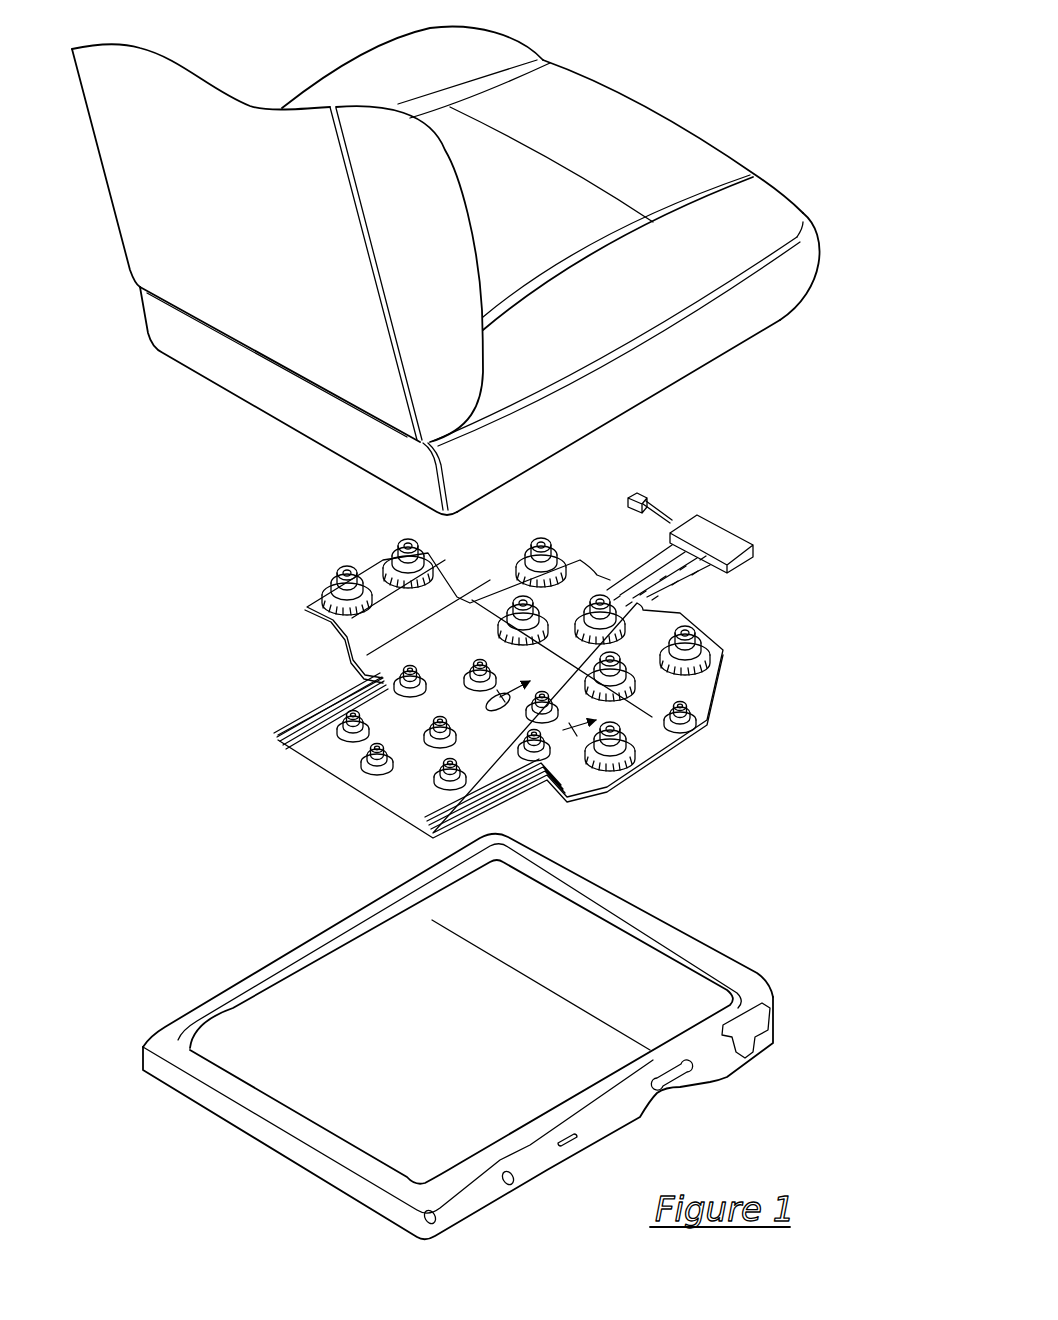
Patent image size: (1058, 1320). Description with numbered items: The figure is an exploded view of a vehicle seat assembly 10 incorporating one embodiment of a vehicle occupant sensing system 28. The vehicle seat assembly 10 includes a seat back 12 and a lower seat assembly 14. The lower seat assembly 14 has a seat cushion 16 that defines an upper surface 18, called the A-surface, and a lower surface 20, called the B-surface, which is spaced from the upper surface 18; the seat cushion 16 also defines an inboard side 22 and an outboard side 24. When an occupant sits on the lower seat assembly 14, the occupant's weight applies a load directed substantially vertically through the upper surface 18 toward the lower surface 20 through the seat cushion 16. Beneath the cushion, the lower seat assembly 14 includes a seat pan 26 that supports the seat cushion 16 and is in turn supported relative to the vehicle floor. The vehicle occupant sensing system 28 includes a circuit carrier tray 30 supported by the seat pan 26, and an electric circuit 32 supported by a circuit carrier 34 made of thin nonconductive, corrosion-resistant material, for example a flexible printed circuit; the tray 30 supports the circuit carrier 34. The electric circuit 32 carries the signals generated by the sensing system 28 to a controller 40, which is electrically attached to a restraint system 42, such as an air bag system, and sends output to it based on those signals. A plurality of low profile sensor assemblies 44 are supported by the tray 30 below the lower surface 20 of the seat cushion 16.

The vehicle seat assembly 10 is at (185, 474).
The seat back 12 is at (163, 218).
The lower seat assembly 14 is at (716, 405).
The seat cushion 16 is at (740, 213).
The upper surface 18 is at (525, 210).
The lower surface 20 is at (748, 333).
The inboard side 22 is at (356, 54).
The outboard side 24 is at (737, 306).
The seat pan 26 is at (327, 1080).
The vehicle occupant sensing system 28 is at (380, 703).
The circuit carrier tray 30 is at (273, 723).
The electric circuit 32 is at (672, 628).
The circuit carrier 34 is at (493, 777).
The controller 40 is at (720, 530).
The restraint system 42 is at (640, 493).
The low profile sensor assemblies 44 is at (712, 628).